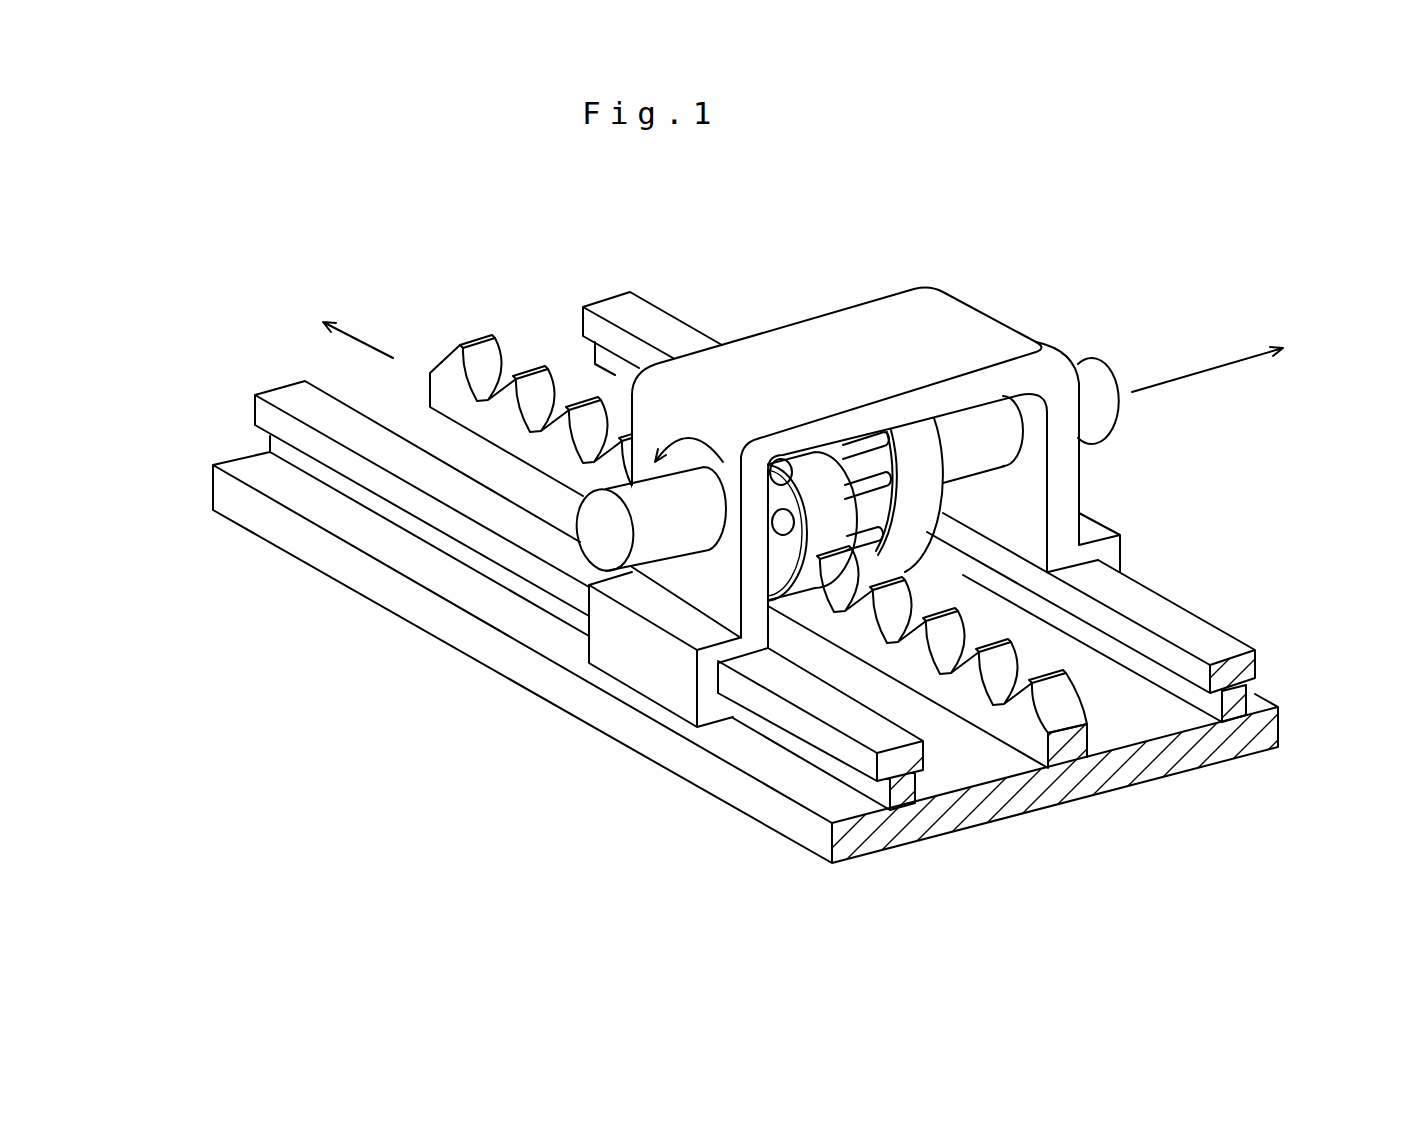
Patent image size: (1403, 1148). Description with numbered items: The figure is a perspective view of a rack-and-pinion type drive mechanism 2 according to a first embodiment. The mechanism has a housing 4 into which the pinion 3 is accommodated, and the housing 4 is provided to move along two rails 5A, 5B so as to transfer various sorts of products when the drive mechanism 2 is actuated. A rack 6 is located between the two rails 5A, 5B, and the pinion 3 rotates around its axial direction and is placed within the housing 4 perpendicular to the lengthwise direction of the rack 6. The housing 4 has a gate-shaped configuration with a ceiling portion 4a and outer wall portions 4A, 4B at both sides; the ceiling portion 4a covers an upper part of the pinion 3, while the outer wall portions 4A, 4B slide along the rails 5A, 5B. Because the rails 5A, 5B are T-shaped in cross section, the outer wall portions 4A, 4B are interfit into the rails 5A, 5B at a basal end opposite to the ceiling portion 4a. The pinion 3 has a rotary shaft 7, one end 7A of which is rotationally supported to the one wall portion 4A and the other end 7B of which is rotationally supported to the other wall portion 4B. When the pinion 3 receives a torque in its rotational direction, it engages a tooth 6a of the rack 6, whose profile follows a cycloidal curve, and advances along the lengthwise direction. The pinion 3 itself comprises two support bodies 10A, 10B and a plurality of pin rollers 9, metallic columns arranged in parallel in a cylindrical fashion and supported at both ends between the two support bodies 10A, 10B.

The rack-and-pinion type drive mechanism 2 is at (1164, 206).
The pinion 3 is at (925, 561).
The housing 4 is at (888, 277).
The ceiling portion 4a is at (826, 335).
The outer wall portion 4A is at (693, 590).
The outer wall portion 4B is at (1040, 443).
The rail 5A is at (847, 722).
The rail 5B is at (1203, 643).
The rack 6 is at (1010, 720).
The tooth 6a is at (1060, 693).
The rotary shaft 7 is at (1001, 444).
The one end 7A is at (648, 540).
The other end 7B is at (1103, 388).
The pin rollers 9 is at (862, 508).
The support body 10A is at (818, 478).
The support body 10B is at (910, 450).